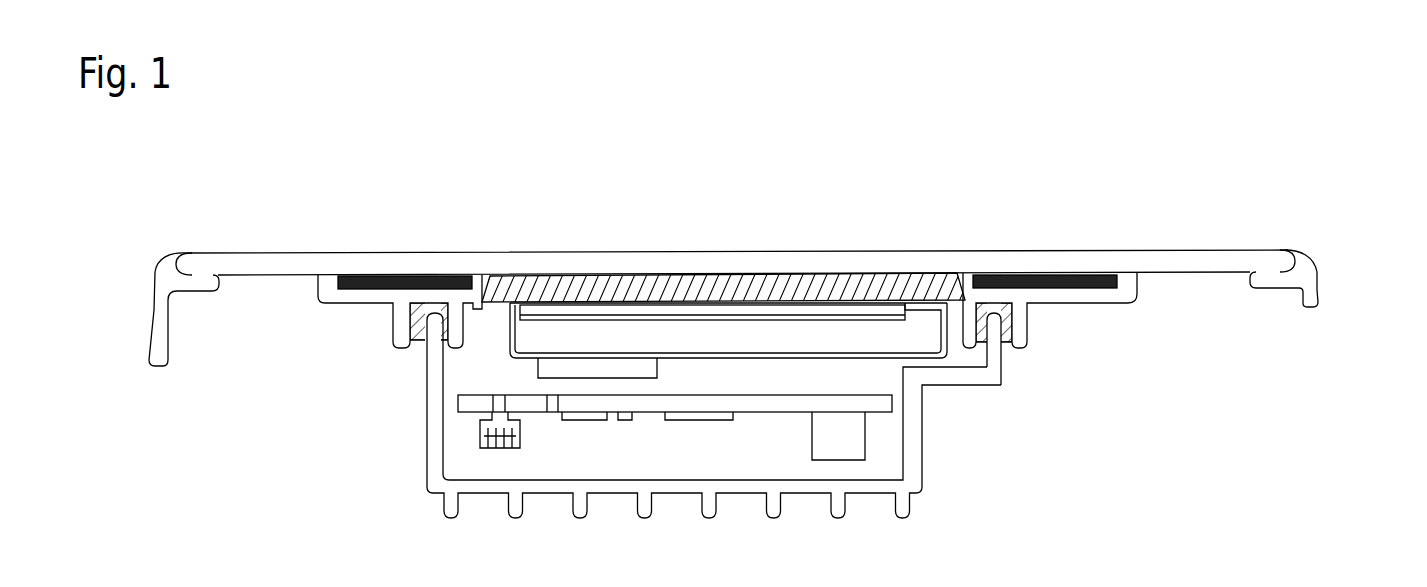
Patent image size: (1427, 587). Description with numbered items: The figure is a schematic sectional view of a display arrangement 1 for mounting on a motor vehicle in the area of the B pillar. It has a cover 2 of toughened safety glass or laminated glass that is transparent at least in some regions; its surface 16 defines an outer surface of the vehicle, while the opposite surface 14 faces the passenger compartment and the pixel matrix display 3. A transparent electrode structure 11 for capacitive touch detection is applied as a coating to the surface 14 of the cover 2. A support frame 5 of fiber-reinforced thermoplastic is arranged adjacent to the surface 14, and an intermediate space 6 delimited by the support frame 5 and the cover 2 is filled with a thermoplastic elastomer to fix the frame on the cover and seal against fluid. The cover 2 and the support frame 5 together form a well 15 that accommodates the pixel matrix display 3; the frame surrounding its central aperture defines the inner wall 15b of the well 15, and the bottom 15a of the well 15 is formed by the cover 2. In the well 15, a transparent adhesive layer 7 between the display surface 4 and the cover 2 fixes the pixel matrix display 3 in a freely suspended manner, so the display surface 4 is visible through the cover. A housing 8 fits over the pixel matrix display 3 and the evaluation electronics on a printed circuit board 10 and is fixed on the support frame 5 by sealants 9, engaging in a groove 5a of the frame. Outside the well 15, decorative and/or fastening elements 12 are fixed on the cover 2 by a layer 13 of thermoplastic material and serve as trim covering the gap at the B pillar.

The display arrangement 1 is at (1254, 83).
The cover 2 is at (1169, 251).
The pixel matrix display 3 is at (534, 335).
The display surface 4 is at (687, 300).
The support frame 5 is at (356, 304).
The groove 5a is at (417, 347).
The intermediate space 6 is at (382, 275).
The transparent adhesive layer 7 is at (508, 277).
The housing 8 is at (918, 491).
The sealants 9 is at (1001, 335).
The printed circuit board 10 is at (775, 413).
The transparent electrode structure 11 is at (568, 275).
The decorative and/or fastening elements 12 is at (149, 320).
The layer of thermoplastic material 13 is at (183, 251).
The surface 14 is at (1200, 275).
The well 15 is at (496, 312).
The bottom 15a is at (646, 300).
The inner wall 15b is at (959, 312).
The surface 16 is at (838, 251).